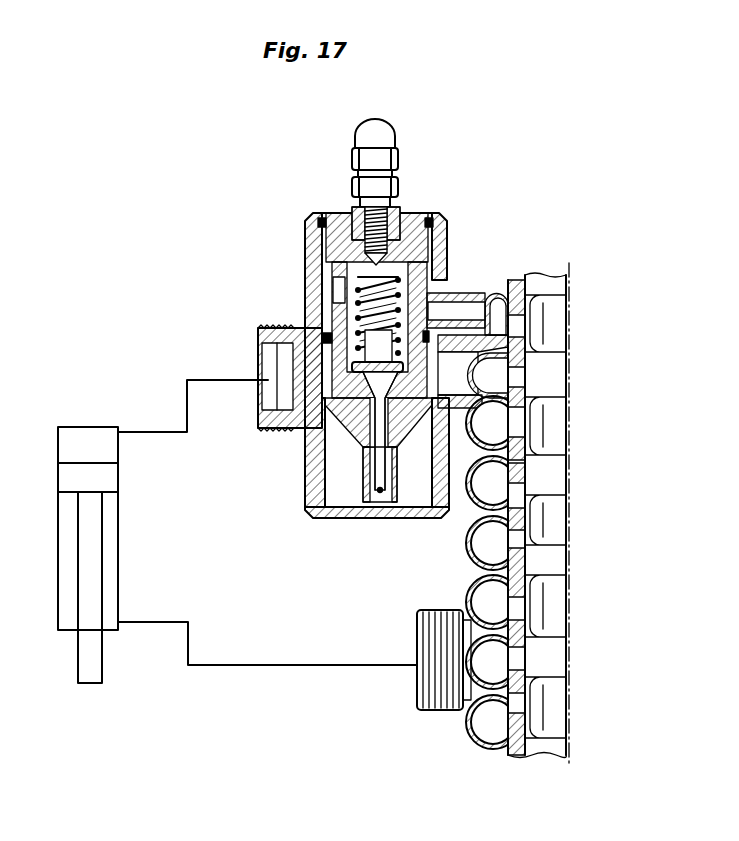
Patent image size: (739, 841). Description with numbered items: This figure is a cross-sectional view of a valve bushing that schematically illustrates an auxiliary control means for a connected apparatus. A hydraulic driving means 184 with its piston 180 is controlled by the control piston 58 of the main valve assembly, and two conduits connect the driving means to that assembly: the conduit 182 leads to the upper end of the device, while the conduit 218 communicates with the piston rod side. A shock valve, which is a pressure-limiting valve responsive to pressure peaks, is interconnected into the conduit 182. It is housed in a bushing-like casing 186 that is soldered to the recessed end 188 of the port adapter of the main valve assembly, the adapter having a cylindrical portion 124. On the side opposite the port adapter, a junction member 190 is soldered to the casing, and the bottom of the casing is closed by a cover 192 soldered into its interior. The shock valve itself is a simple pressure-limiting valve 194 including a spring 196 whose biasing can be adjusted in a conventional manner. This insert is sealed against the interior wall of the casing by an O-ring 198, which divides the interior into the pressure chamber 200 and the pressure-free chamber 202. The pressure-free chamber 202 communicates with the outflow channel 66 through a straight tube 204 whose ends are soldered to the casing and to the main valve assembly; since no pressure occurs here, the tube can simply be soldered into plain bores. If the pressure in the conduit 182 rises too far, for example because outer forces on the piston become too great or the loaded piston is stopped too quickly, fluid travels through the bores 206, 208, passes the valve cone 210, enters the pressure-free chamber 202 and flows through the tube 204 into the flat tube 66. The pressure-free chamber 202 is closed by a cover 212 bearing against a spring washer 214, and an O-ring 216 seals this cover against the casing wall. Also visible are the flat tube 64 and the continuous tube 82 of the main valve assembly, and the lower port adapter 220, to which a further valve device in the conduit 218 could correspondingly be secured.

The control piston 58 is at (550, 557).
The flat tube 64 is at (490, 382).
The outflow channel 66 is at (497, 308).
The continuous tube 82 is at (492, 652).
The cylindrical portion 124 is at (458, 365).
The piston 180 is at (68, 620).
The conduit 182 is at (186, 395).
The hydraulic driving means 184 is at (75, 445).
The bushing-like casing 186 is at (318, 287).
The recessed end 188 is at (458, 452).
The junction member 190 is at (265, 368).
The cover 192 is at (344, 520).
The pressure-limiting valve 194 is at (350, 430).
The spring 196 is at (338, 275).
The O-ring 198 is at (322, 333).
The pressure chamber 200 is at (335, 468).
The pressure-free chamber 202 is at (445, 262).
The tube 204 is at (462, 294).
The bore 206 is at (367, 467).
The bore 208 is at (382, 492).
The valve cone 210 is at (398, 428).
The cover 212 is at (409, 237).
The spring washer 214 is at (433, 220).
The O-ring 216 is at (322, 226).
The conduit 218 is at (188, 648).
The lower port adapter 220 is at (418, 707).